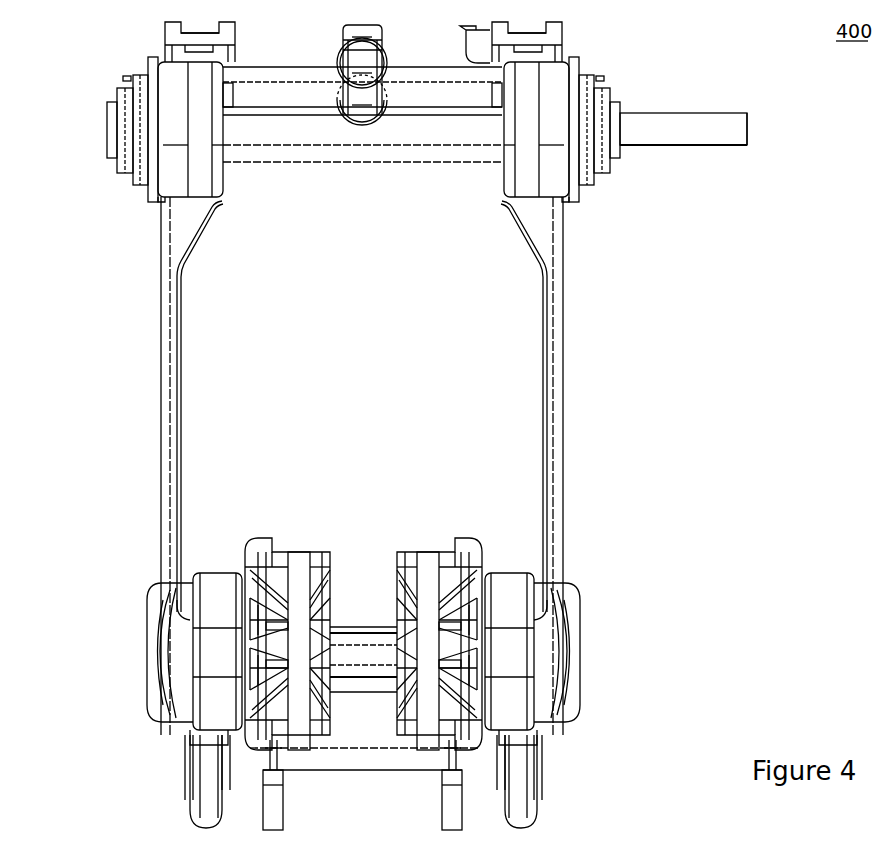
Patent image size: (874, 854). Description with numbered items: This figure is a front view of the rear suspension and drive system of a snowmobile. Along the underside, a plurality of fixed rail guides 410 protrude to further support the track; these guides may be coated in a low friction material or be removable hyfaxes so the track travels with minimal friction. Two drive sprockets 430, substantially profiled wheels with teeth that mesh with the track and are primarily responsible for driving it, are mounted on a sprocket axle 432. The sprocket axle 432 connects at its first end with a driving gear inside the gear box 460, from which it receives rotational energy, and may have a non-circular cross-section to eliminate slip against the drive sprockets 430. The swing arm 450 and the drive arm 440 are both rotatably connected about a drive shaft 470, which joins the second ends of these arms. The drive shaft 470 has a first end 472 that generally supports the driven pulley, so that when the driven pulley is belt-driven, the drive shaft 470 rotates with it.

The fixed rail guides 410 is at (428, 802).
The drive sprockets 430 is at (300, 568).
The sprocket axle 432 is at (352, 655).
The drive arm 440 is at (165, 383).
The swing arm 450 is at (557, 400).
The gear box 460 is at (142, 685).
The drive shaft 470 is at (653, 132).
The first end 472 is at (756, 127).